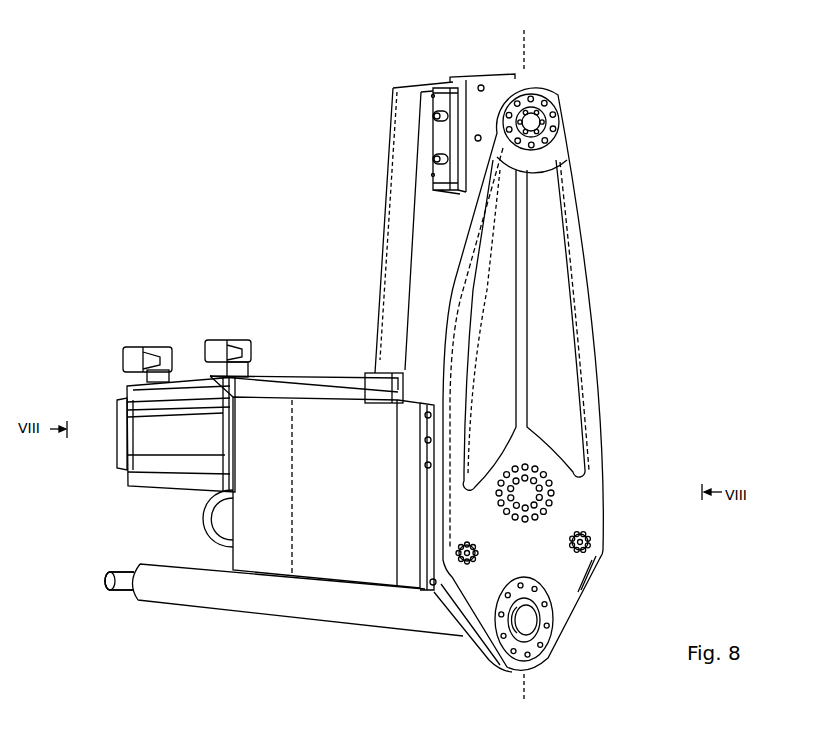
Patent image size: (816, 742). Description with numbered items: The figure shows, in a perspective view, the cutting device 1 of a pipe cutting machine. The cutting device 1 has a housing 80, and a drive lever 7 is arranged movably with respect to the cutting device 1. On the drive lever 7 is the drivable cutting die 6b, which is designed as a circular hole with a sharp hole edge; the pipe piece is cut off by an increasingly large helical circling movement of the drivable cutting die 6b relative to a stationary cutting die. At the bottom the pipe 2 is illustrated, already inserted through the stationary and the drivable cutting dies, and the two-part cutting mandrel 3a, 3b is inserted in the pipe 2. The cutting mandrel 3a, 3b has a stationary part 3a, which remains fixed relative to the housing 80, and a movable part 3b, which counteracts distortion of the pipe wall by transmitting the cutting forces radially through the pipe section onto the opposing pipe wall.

The cutting device 1 is at (683, 188).
The pipe 2 is at (243, 595).
The stationary part of the cutting mandrel 3a is at (114, 584).
The movable part of the cutting mandrel 3b is at (114, 584).
The drivable cutting die 6b is at (547, 628).
The drive lever 7 is at (592, 493).
The housing 80 is at (334, 426).